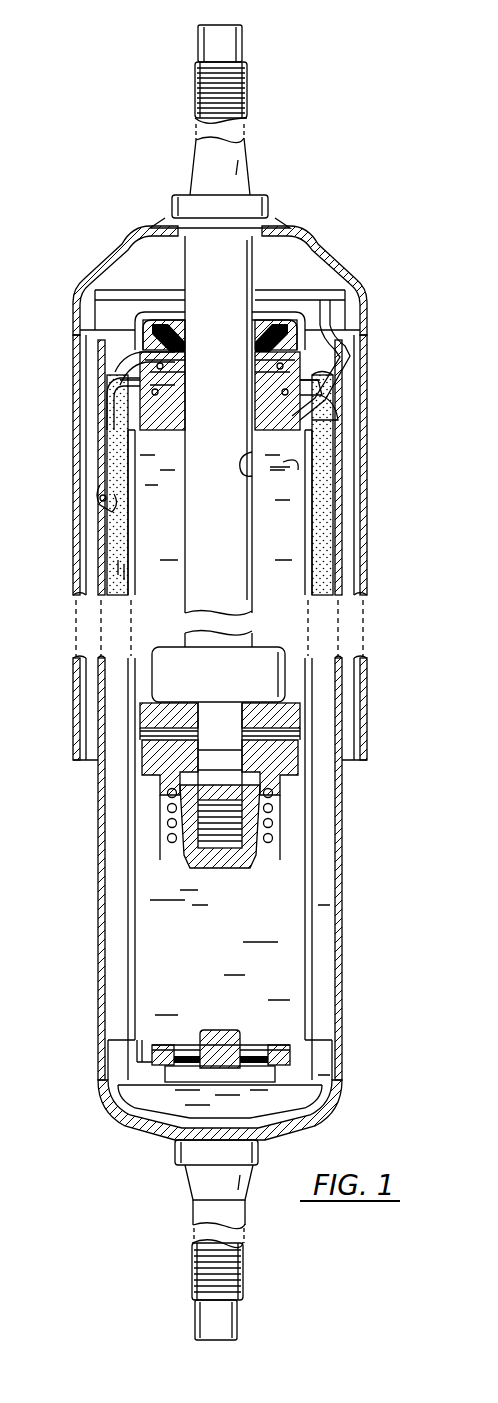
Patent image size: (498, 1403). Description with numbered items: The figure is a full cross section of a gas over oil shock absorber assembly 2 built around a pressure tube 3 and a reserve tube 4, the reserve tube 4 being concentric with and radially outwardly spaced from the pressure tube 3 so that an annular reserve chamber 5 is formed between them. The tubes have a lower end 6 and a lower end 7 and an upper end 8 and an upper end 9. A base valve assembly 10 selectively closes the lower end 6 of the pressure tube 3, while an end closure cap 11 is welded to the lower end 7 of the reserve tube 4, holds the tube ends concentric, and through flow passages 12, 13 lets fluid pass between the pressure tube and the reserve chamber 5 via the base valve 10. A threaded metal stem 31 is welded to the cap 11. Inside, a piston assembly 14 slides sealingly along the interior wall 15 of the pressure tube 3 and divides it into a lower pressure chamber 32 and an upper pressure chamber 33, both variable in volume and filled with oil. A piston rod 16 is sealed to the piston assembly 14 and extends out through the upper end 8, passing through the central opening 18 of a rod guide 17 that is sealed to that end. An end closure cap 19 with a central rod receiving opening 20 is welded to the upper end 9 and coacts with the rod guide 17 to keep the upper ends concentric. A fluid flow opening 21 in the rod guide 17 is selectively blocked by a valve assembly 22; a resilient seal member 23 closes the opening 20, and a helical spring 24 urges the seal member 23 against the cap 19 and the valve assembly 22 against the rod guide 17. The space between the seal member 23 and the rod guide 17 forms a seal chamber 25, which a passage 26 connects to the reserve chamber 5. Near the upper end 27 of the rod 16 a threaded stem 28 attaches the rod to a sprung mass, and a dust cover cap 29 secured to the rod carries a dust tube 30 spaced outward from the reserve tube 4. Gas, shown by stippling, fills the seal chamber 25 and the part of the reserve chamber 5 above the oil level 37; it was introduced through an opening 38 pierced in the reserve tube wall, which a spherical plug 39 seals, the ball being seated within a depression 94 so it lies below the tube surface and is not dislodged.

The shock absorber assembly 2 is at (378, 700).
The pressure tube 3 is at (308, 497).
The reserve tube 4 is at (340, 523).
The reserve chamber 5 is at (327, 828).
The first end of pressure tube 6 is at (140, 1055).
The first end of reserve tube 7 is at (105, 1062).
The second end of pressure tube 8 is at (312, 442).
The second end of reserve tube 9 is at (330, 398).
The base valve assembly 10 is at (250, 1032).
The end closure cap 11 is at (318, 1104).
The flow passage 12 is at (280, 1053).
The flow passage 13 is at (300, 1093).
The piston assembly 14 is at (305, 748).
The interior wall 15 is at (300, 878).
The piston rod 16 is at (228, 568).
The rod guide 17 is at (318, 408).
The central opening 18 is at (243, 455).
The end closure cap 19 is at (298, 347).
The central rod receiving opening 20 is at (258, 310).
The fluid flow opening 21 is at (280, 470).
The valve assembly 22 is at (317, 383).
The resilient seal member 23 is at (287, 333).
The helical spring 24 is at (158, 372).
The seal chamber 25 is at (150, 385).
The passage 26 is at (123, 407).
The upper end of rod 27 is at (232, 44).
The threaded stem 28 is at (245, 82).
The dust cover cap 29 is at (293, 232).
The dust tube 30 is at (370, 574).
The threaded metal stem 31 is at (240, 1268).
The lower pressure chamber 32 is at (214, 948).
The upper pressure chamber 33 is at (172, 533).
The oil level 37 is at (123, 567).
The opening 38 is at (110, 510).
The spherical plug 39 is at (99, 499).
The depression 94 is at (100, 490).